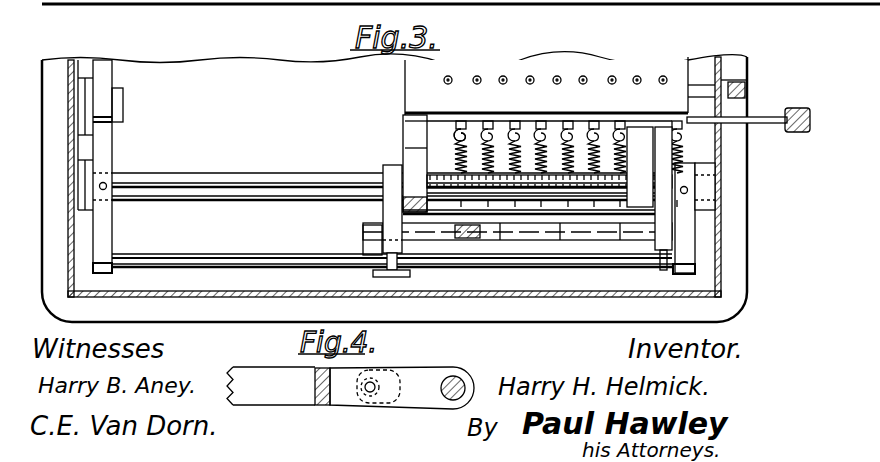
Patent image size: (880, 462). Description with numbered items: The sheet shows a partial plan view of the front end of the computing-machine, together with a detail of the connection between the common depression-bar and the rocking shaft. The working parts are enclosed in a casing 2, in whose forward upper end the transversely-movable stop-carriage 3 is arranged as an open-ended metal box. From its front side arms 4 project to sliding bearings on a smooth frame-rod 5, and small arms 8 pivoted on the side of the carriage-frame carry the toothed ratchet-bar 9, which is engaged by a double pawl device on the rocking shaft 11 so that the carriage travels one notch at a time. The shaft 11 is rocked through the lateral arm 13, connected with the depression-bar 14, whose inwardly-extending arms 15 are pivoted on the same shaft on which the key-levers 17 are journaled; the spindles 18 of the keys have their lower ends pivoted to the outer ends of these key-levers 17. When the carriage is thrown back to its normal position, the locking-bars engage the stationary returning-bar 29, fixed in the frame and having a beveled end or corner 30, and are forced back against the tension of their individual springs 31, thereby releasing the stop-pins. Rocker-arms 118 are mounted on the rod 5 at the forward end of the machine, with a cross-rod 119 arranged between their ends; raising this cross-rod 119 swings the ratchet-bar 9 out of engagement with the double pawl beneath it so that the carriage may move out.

In FIG. 3, the casing 2 is at (722, 181).
In FIG. 3, the stop-carriage 3 is at (560, 132).
In FIG. 3, the arms 4 is at (412, 182).
In FIG. 3, the frame-rod 5 is at (226, 174).
In FIG. 3, the small arms 8 is at (390, 202).
In FIG. 3, the ratchet-bar 9 is at (590, 243).
In FIG. 4, the rocking shaft 11 is at (458, 380).
In FIG. 4, the lateral arm 13 is at (420, 398).
In FIG. 4, the depression-bar 14 is at (277, 400).
In FIG. 4, the inwardly-extending arms 15 is at (322, 407).
In FIG. 3, the key-levers 17 is at (700, 85).
In FIG. 3, the spindles 18 is at (745, 85).
In FIG. 3, the returning-bar 29 is at (452, 147).
In FIG. 3, the beveled end 30 is at (455, 135).
In FIG. 3, the springs 31 is at (450, 157).
In FIG. 3, the rocker-arms 118 is at (107, 155).
In FIG. 3, the cross-rod 119 is at (226, 251).